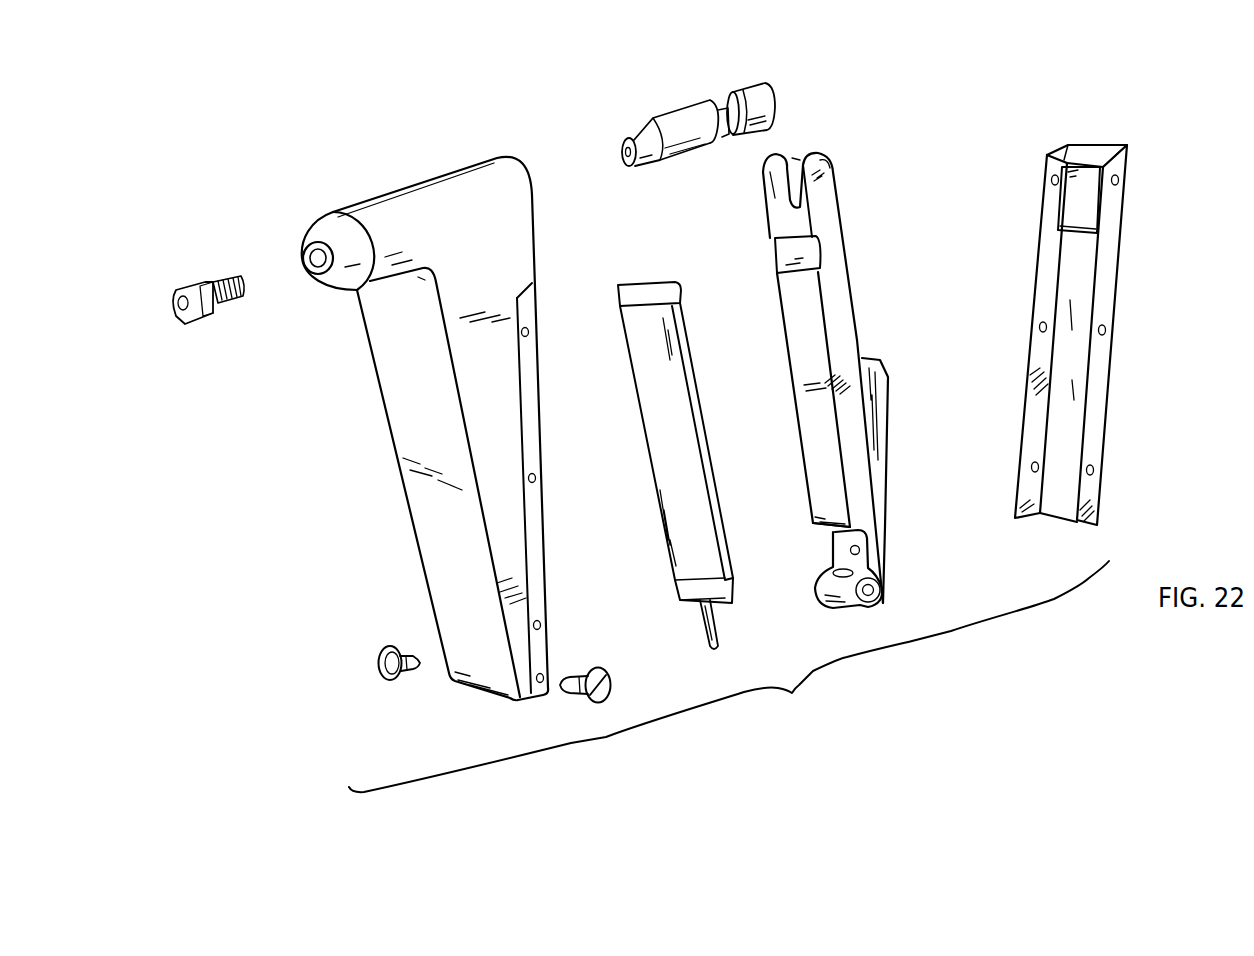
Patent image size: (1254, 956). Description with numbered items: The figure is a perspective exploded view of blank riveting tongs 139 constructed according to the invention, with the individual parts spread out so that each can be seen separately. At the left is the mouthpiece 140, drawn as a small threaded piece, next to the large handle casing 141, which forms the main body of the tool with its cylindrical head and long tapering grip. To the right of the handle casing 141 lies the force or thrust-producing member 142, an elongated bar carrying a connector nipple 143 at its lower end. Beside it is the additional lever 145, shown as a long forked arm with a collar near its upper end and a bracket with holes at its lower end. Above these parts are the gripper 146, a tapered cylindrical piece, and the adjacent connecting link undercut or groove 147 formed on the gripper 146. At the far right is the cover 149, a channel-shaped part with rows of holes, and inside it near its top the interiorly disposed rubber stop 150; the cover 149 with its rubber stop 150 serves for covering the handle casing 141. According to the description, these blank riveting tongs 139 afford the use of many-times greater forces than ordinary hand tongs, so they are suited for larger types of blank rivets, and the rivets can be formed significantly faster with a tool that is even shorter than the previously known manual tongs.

The blank riveting tongs 139 is at (419, 118).
The mouthpiece 140 is at (203, 310).
The handle casing 141 is at (497, 172).
The force or thrust-producing member 142 is at (672, 457).
The connector nipple 143 is at (721, 643).
The additional lever 145 is at (852, 422).
The gripper 146 is at (670, 122).
The connecting link undercut or groove 147 is at (727, 108).
The cover 149 is at (1100, 370).
The rubber stop 150 is at (1082, 210).